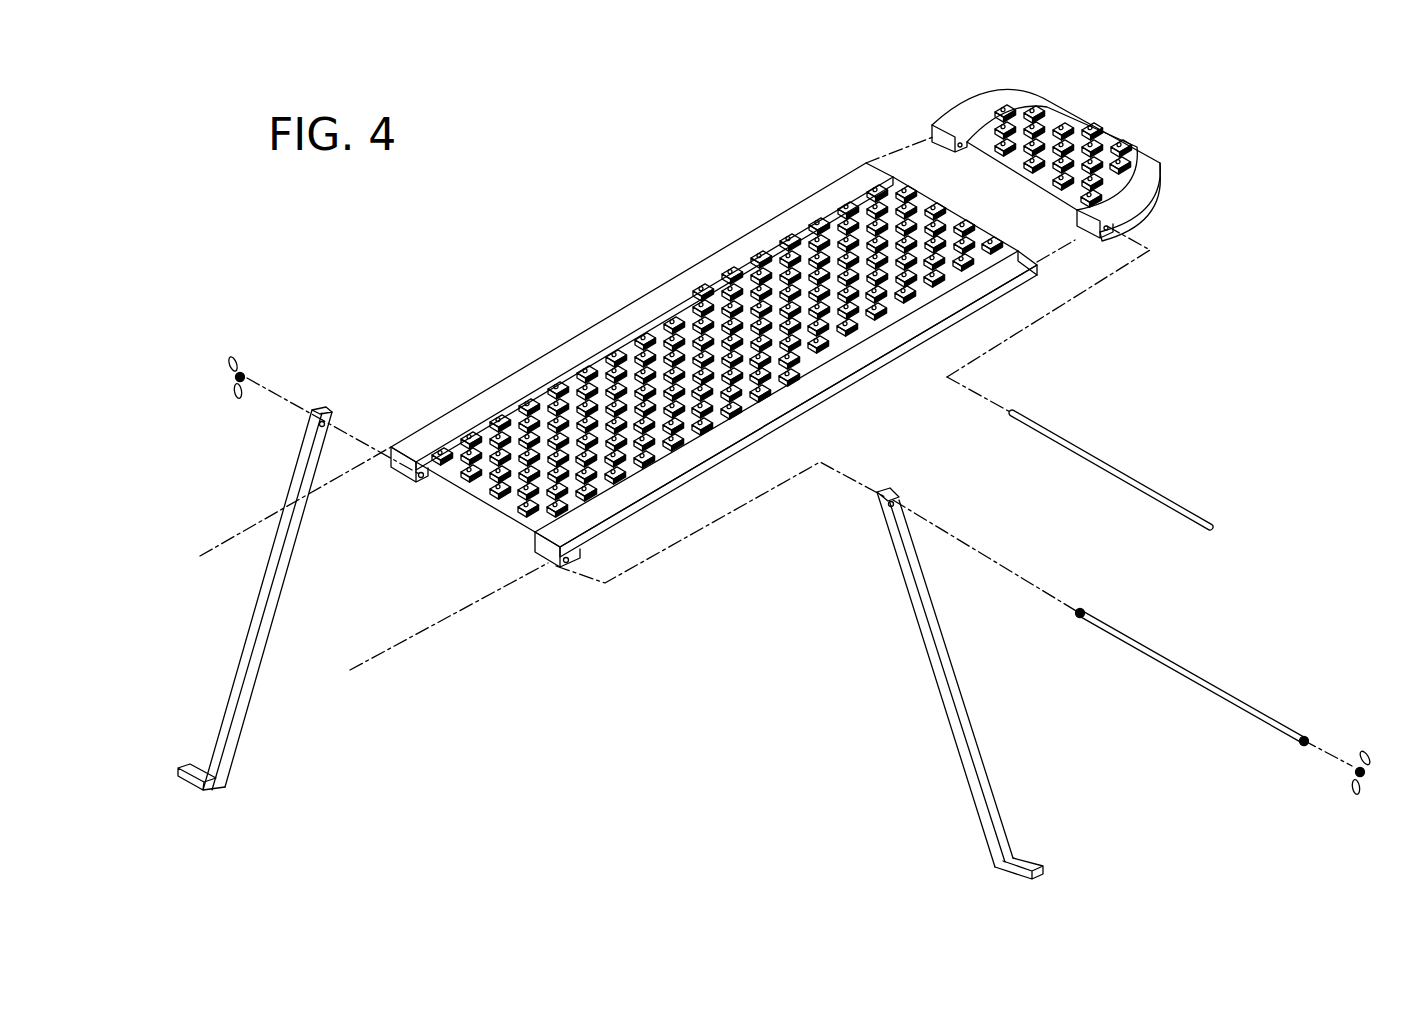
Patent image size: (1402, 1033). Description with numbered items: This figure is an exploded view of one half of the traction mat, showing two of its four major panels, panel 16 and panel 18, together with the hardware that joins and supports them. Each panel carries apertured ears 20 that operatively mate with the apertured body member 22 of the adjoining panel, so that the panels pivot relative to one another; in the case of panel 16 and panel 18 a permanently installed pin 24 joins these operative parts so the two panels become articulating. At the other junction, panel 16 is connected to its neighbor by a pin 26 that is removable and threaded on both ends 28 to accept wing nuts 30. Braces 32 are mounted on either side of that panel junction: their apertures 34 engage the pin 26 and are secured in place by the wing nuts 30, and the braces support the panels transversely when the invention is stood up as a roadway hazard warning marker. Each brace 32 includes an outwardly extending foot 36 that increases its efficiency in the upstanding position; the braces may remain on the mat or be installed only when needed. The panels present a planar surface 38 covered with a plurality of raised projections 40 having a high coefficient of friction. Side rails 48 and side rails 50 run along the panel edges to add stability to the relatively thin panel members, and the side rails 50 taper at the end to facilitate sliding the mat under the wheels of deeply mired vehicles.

The panel 16 is at (714, 360).
The panel 18 is at (1090, 149).
The apertured ears 20 is at (937, 138).
The apertured body member 22 is at (980, 232).
The pin 24 is at (1105, 462).
The pin 26 is at (1175, 668).
The threaded ends 28 is at (1085, 612).
The wing nuts 30 is at (237, 372).
The braces 32 is at (268, 600).
The apertures 34 is at (330, 420).
The feet 36 is at (200, 778).
The planar surface 38 is at (1135, 160).
The raised projections 40 is at (730, 275).
The side rails 48 is at (555, 360).
The side rails 50 is at (1013, 97).